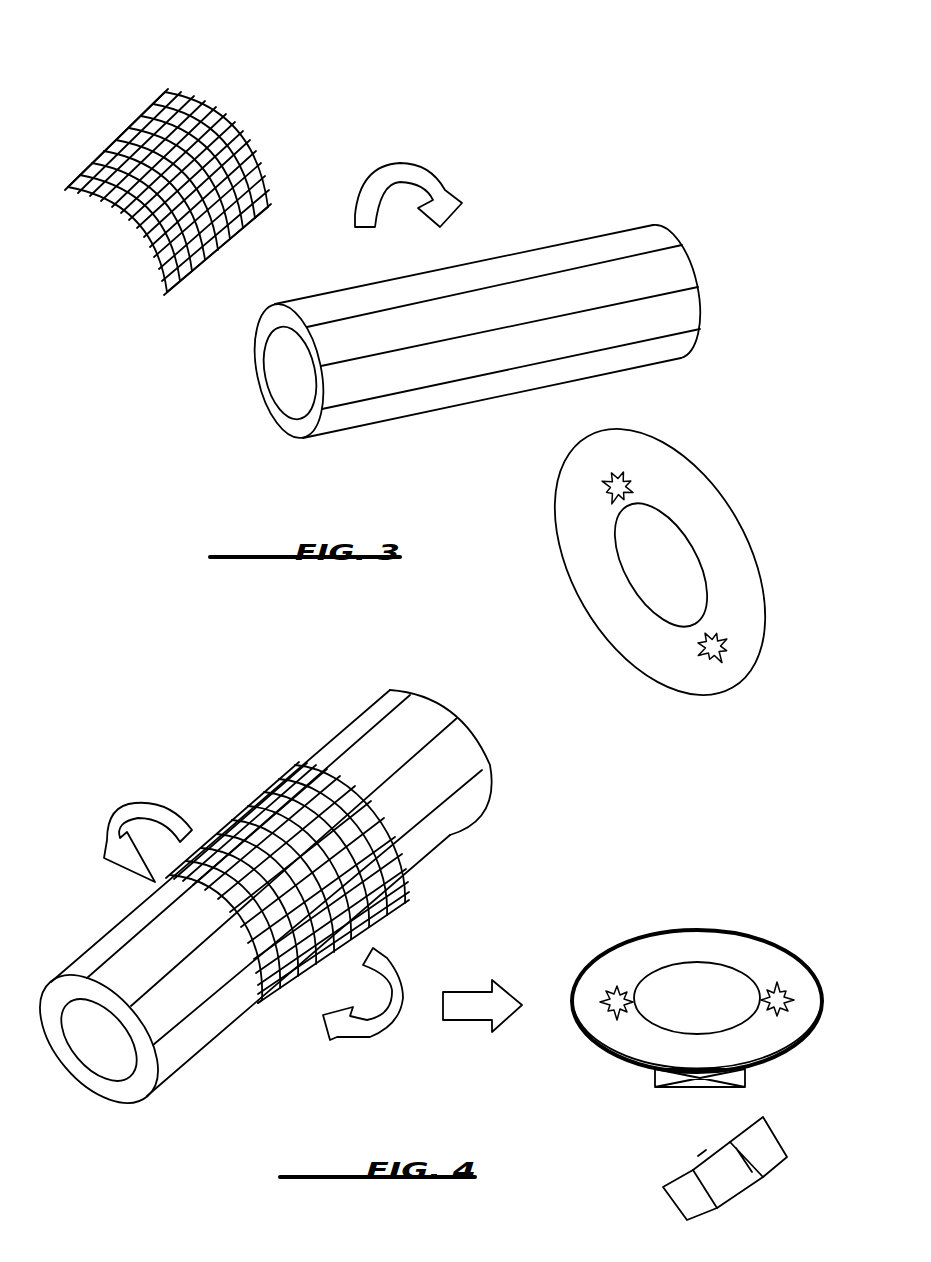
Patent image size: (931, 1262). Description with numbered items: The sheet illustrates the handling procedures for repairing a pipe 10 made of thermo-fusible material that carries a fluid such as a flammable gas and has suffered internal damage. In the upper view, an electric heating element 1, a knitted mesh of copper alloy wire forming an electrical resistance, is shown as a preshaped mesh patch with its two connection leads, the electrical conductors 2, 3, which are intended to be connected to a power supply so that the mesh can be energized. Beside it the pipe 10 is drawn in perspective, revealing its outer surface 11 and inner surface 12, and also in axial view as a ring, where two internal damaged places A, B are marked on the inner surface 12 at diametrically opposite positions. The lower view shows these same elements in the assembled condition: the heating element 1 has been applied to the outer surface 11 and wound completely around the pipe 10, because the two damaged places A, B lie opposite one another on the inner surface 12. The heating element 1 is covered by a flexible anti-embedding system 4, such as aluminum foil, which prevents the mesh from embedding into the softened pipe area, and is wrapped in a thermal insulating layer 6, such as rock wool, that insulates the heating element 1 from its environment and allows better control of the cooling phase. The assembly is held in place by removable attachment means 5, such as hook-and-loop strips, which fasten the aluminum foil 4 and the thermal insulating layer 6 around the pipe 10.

In FIG. 3, the electric heating element 1 is at (237, 123).
In FIG. 4, the electric heating element 1 is at (243, 913).
In FIG. 3, the electrical conductor 2 is at (166, 90).
In FIG. 3, the electrical conductor 3 is at (165, 294).
In FIG. 4, the electrical conductor 3 is at (283, 950).
In FIG. 4, the flexible anti-embedding system 4 is at (773, 1060).
In FIG. 4, the removable attachment means 5 is at (673, 1088).
In FIG. 4, the thermal insulating layer 6 is at (622, 940).
In FIG. 3, the pipe 10 is at (702, 268).
In FIG. 4, the pipe 10 is at (87, 1098).
In FIG. 3, the outer surface 11 is at (468, 363).
In FIG. 4, the outer surface 11 is at (408, 723).
In FIG. 3, the inner surface 12 is at (280, 373).
In FIG. 3, the damaged place A is at (625, 483).
In FIG. 4, the damaged place A is at (610, 997).
In FIG. 3, the damaged place B is at (723, 638).
In FIG. 4, the damaged place B is at (772, 993).